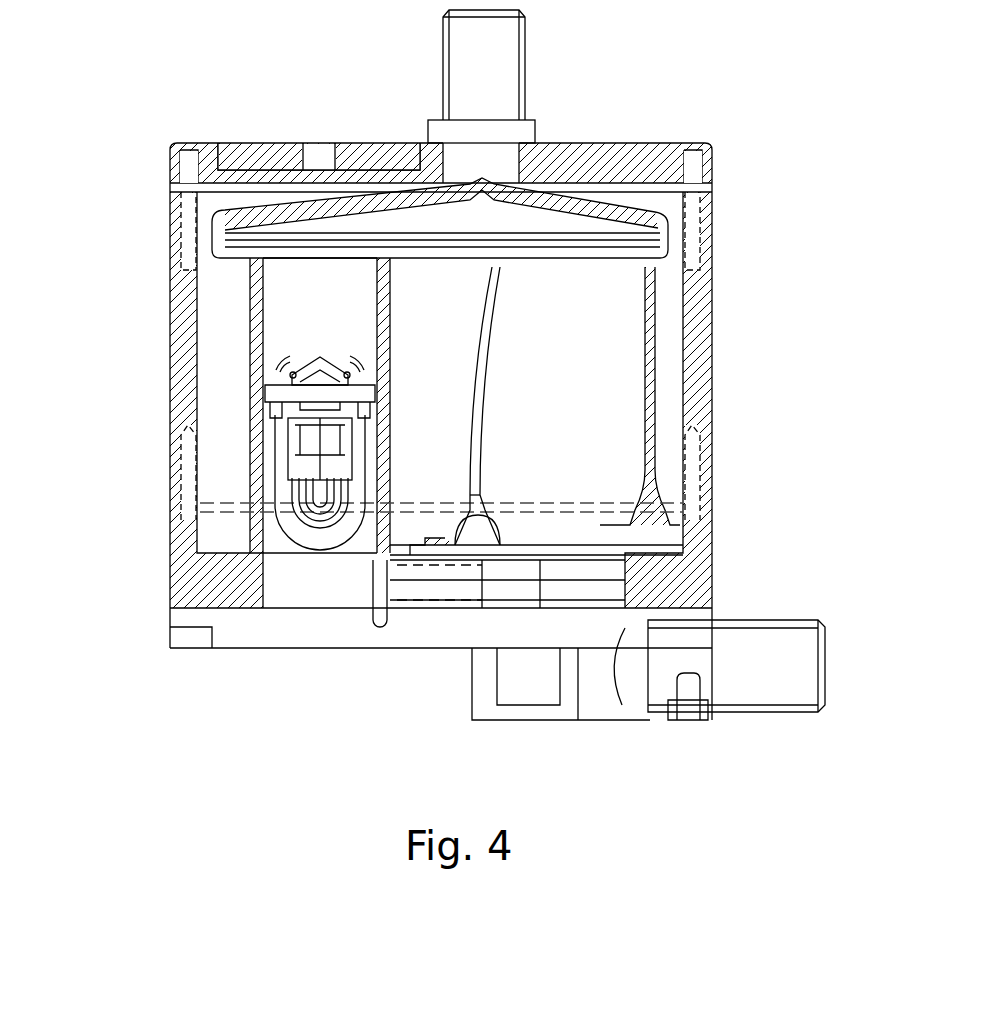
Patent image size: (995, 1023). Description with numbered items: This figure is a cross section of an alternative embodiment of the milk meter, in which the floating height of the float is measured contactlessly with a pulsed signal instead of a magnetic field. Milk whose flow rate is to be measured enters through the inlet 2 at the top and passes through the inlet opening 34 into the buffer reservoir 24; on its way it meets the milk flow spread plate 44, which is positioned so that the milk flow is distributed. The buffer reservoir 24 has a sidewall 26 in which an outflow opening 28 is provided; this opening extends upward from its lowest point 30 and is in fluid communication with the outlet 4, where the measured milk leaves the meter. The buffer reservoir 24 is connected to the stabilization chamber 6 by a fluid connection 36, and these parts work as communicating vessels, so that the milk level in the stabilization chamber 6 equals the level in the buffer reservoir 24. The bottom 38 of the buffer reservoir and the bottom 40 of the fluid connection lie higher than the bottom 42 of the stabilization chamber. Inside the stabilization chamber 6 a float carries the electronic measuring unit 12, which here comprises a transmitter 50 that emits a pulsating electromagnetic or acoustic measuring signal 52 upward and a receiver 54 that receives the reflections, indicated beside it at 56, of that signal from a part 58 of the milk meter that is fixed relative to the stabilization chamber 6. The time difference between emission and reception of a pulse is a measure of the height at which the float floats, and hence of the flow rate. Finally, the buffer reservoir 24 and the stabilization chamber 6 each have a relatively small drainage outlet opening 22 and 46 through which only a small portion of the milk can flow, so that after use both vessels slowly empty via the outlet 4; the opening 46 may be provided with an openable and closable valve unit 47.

The inlet 2 is at (522, 50).
The outlet 4 is at (772, 645).
The stabilization chamber 6 is at (290, 325).
The electronic measuring unit 12 is at (315, 486).
The outlet opening 22 is at (287, 610).
The buffer reservoir 24 is at (437, 300).
The sidewall 26 is at (285, 508).
The outflow opening 28 is at (462, 400).
The lowest point 30 is at (440, 432).
The inlet opening 34 is at (500, 175).
The fluid connection 36 is at (392, 530).
The bottom of the buffer reservoir 38 is at (428, 543).
The bottom of the fluid connection 40 is at (380, 565).
The bottom of the stabilization chamber 42 is at (332, 612).
The milk flow spread plate 44 is at (607, 205).
The outlet opening 46 is at (428, 565).
The valve unit 47 is at (445, 620).
The transmitter 50 is at (292, 375).
The measuring signal 52 is at (292, 362).
The receiver 54 is at (343, 367).
The sensor element 56 is at (355, 356).
The part of the milk meter 58 is at (315, 250).